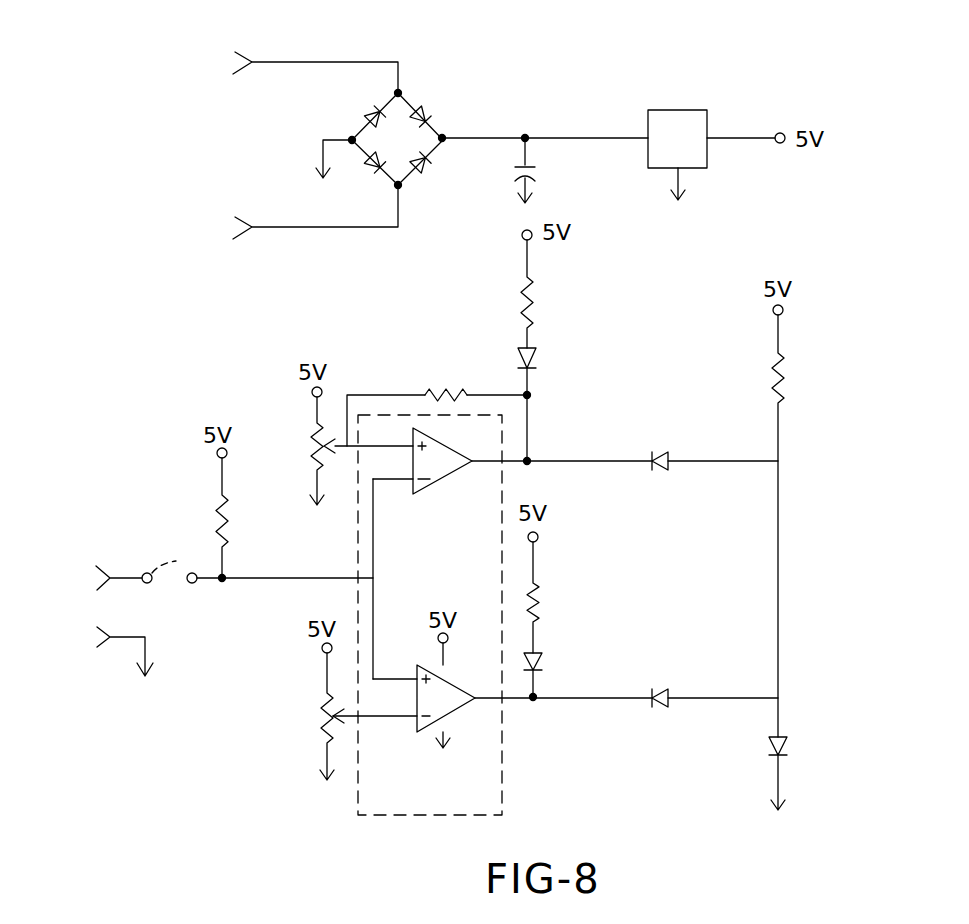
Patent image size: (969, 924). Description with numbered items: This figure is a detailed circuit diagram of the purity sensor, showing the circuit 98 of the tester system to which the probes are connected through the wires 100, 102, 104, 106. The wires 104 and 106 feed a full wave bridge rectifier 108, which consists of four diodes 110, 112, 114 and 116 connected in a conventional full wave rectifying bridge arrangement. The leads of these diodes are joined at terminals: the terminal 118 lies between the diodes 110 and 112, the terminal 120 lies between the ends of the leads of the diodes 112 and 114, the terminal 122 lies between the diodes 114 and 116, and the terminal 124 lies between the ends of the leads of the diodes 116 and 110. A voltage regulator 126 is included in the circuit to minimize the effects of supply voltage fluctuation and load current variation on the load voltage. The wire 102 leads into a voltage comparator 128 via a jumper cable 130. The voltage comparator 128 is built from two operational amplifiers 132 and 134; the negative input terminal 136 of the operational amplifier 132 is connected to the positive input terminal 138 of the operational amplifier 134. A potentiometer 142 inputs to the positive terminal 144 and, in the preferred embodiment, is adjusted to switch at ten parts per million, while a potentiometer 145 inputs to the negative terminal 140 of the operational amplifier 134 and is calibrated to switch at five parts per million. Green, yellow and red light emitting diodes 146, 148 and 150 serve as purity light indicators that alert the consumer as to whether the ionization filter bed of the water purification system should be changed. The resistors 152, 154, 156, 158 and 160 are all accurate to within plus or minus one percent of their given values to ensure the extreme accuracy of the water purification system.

The circuit 98 is at (447, 33).
The wire 100 is at (99, 630).
The wire 102 is at (100, 578).
The wire 104 is at (237, 56).
The wire 106 is at (238, 219).
The full wave bridge rectifier 108 is at (447, 106).
The diode 110 is at (366, 109).
The diode 112 is at (432, 121).
The diode 114 is at (430, 165).
The diode 116 is at (374, 168).
The terminal 118 is at (400, 92).
The terminal 120 is at (449, 139).
The terminal 122 is at (401, 189).
The terminal 124 is at (350, 138).
The voltage regulator 126 is at (734, 90).
The voltage comparator 128 is at (503, 792).
The jumper cable 130 is at (175, 560).
The operational amplifier 132 is at (440, 486).
The operational amplifier 134 is at (456, 712).
The negative input terminal 136 is at (411, 484).
The positive input terminal 138 is at (416, 676).
The negative terminal 140 is at (415, 728).
The potentiometer 142 is at (322, 447).
The positive terminal 144 is at (412, 438).
The potentiometer 145 is at (324, 719).
The green light emitting diode 146 is at (535, 358).
The yellow light emitting diode 148 is at (548, 661).
The red light emitting diode 150 is at (771, 742).
The resistor 152 is at (218, 519).
The resistor 154 is at (452, 370).
The resistor 156 is at (524, 324).
The resistor 158 is at (541, 599).
The resistor 160 is at (774, 378).